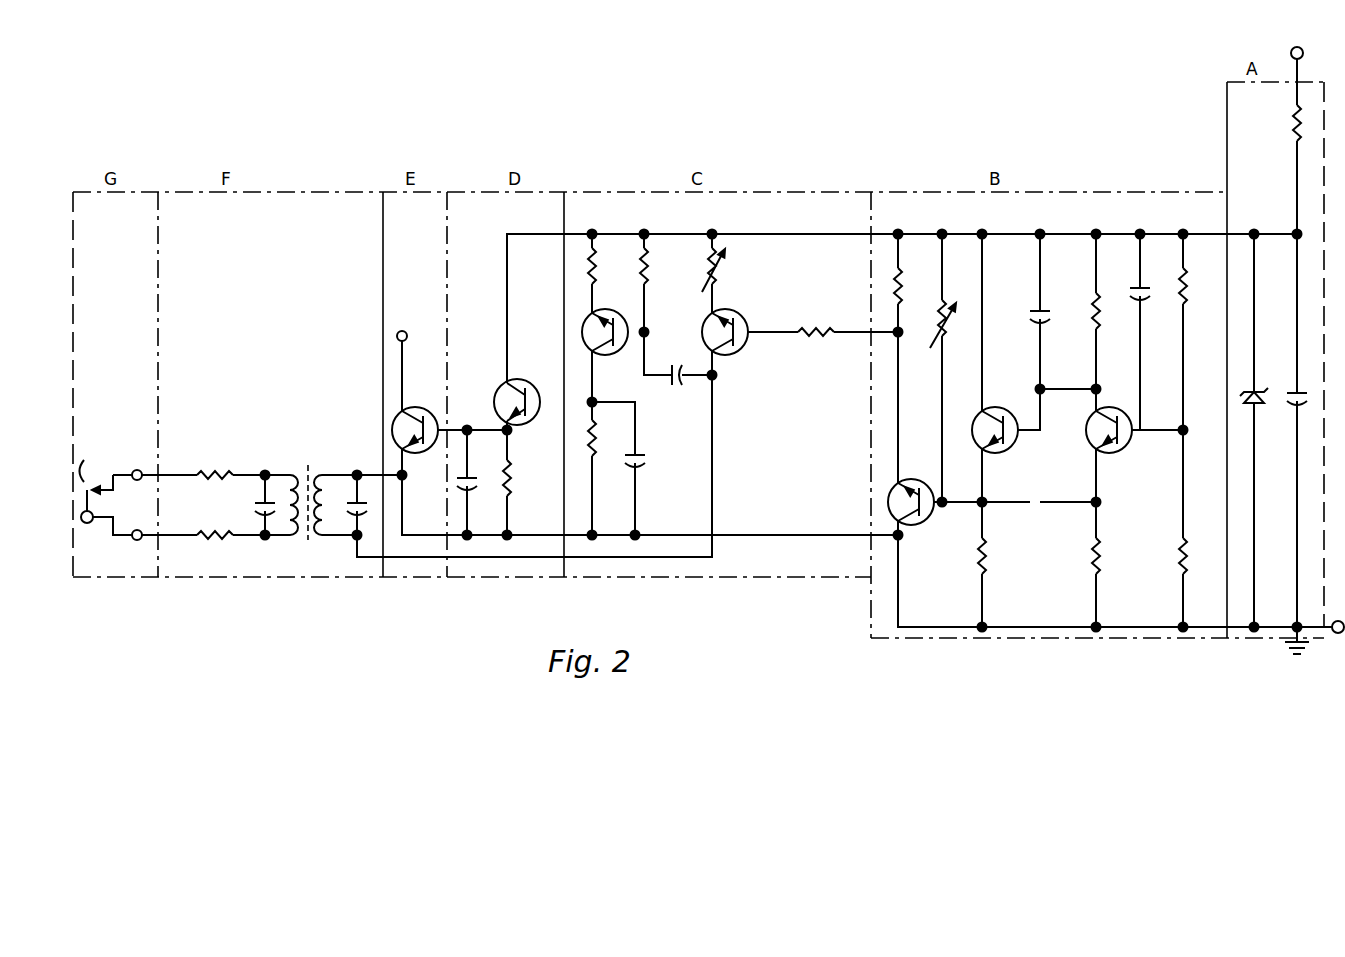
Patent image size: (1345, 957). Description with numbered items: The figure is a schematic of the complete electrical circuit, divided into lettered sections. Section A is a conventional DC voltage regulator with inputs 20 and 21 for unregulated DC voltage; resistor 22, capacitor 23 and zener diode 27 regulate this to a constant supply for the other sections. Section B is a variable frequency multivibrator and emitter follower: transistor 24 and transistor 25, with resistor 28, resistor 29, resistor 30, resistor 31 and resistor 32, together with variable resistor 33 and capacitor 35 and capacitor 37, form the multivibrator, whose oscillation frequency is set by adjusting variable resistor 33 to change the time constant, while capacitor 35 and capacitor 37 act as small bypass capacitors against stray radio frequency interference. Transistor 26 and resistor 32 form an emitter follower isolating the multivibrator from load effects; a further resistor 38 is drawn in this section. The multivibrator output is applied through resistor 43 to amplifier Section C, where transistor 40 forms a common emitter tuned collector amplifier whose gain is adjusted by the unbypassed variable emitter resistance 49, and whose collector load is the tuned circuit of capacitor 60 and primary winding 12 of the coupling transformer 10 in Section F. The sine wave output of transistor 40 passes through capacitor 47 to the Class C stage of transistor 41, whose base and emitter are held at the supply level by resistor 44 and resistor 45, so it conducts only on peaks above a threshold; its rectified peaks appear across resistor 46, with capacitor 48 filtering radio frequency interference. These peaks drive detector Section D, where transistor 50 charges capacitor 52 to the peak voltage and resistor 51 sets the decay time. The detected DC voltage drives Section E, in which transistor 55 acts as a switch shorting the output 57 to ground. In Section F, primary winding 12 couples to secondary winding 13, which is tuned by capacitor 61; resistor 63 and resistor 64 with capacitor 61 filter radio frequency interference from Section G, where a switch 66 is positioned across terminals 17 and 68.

The coupling transformer 10 is at (311, 463).
The primary winding 12 is at (324, 472).
The secondary winding 13 is at (292, 538).
The terminal 17 is at (140, 470).
The input 20 is at (1303, 50).
The input 21 is at (1336, 634).
The resistor 22 is at (1292, 122).
The capacitor 23 is at (1309, 397).
The transistor 24 is at (1122, 448).
The transistor 25 is at (1008, 448).
The transistor 26 is at (925, 520).
The zener diode 27 is at (1264, 400).
The resistor 28 is at (1189, 284).
The resistor 29 is at (1188, 556).
The resistor 30 is at (1100, 560).
The resistor 31 is at (986, 558).
The resistor 32 is at (1090, 308).
The variable resistor 33 is at (947, 310).
The capacitor 35 is at (1128, 294).
The capacitor 37 is at (1028, 314).
The resistor 38 is at (904, 280).
The transistor 40 is at (738, 314).
The transistor 41 is at (620, 350).
The resistor 43 is at (832, 327).
The resistor 44 is at (650, 270).
The resistor 45 is at (598, 270).
The resistor 46 is at (598, 442).
The capacitor 47 is at (678, 388).
The capacitor 48 is at (648, 458).
The variable emitter resistance 49 is at (716, 282).
The transistor 50 is at (531, 381).
The resistor 51 is at (514, 483).
The capacitor 52 is at (478, 483).
The transistor 55 is at (432, 396).
The output 57 is at (407, 333).
The capacitor 60 is at (340, 504).
The capacitor 61 is at (254, 507).
The resistor 63 is at (232, 458).
The resistor 64 is at (225, 541).
The switch 66 is at (89, 484).
The terminal 68 is at (138, 541).